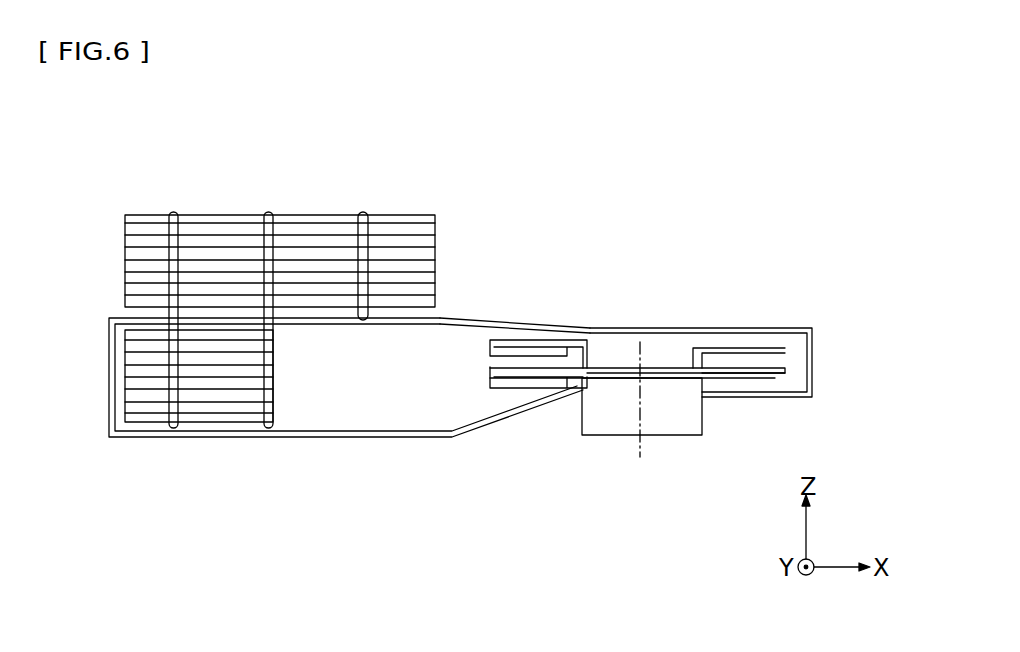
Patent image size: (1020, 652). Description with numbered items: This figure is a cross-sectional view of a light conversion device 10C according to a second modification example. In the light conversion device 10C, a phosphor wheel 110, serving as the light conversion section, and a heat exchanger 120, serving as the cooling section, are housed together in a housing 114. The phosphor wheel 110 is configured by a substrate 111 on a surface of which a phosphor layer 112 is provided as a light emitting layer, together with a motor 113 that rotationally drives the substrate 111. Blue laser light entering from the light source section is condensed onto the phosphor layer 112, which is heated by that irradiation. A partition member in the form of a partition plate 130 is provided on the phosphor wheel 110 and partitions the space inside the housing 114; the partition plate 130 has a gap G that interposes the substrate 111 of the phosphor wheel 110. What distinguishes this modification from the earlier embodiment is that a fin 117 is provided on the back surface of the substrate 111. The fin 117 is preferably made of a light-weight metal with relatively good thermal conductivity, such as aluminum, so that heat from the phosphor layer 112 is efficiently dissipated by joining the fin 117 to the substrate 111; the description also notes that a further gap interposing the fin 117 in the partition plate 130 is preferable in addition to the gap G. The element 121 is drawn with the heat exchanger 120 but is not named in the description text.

The light conversion device 10C is at (687, 329).
The phosphor wheel 110 is at (782, 360).
The substrate 111 is at (787, 371).
The phosphor layer 112 is at (772, 382).
The motor 113 is at (688, 437).
The housing 114 is at (513, 323).
The fin 117 is at (740, 347).
The heat exchanger 120 is at (349, 323).
The coil 121 is at (298, 217).
The partition plate 130 is at (435, 400).
The gap G is at (577, 345).